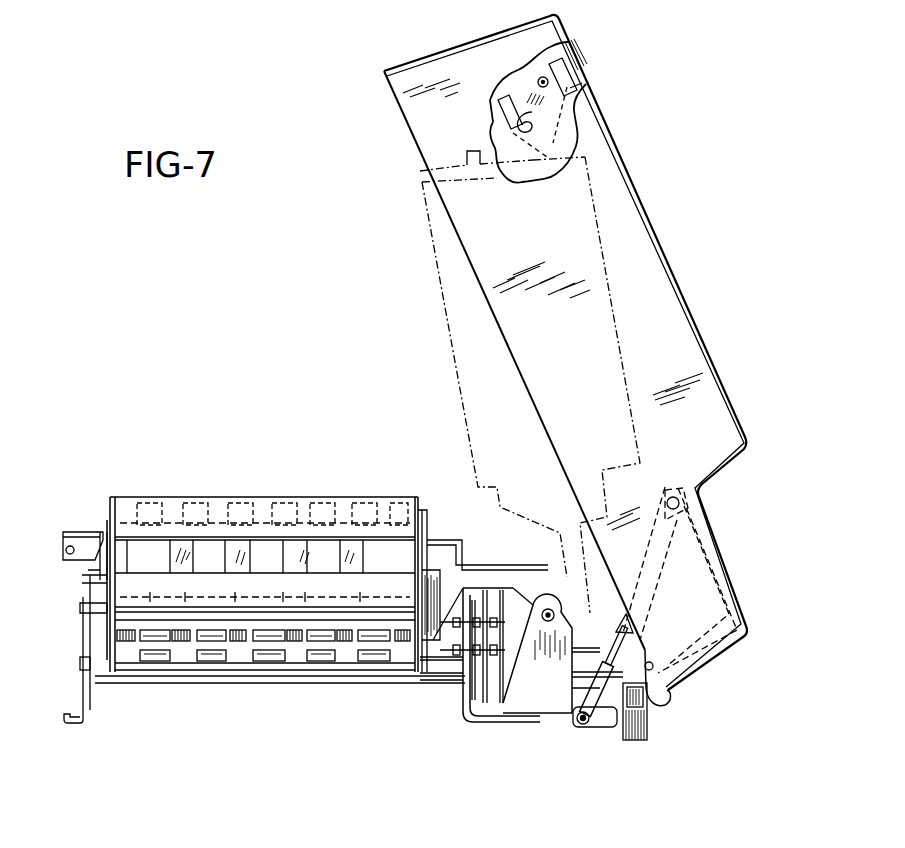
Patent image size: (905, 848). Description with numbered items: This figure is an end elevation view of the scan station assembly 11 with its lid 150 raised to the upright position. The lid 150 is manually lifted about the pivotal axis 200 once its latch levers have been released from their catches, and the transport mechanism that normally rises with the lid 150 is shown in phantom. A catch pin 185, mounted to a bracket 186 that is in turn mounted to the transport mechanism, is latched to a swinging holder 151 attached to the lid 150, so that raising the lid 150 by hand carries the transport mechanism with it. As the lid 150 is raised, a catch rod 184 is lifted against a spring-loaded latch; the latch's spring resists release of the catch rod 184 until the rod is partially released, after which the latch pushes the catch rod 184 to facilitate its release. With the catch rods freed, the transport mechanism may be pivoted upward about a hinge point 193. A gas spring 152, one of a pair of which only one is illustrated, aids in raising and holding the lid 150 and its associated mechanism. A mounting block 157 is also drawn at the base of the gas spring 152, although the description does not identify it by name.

The scan station assembly 11 is at (130, 478).
The lid 150 is at (674, 272).
The swinging holder 151 is at (493, 122).
The gas spring 152 is at (636, 652).
The strut mounting block 157 is at (572, 712).
The catch rod 184 is at (420, 171).
The catch pin 185 is at (490, 136).
The bracket 186 is at (583, 90).
The hinge point 193 is at (548, 625).
The pivotal axis 200 is at (666, 698).